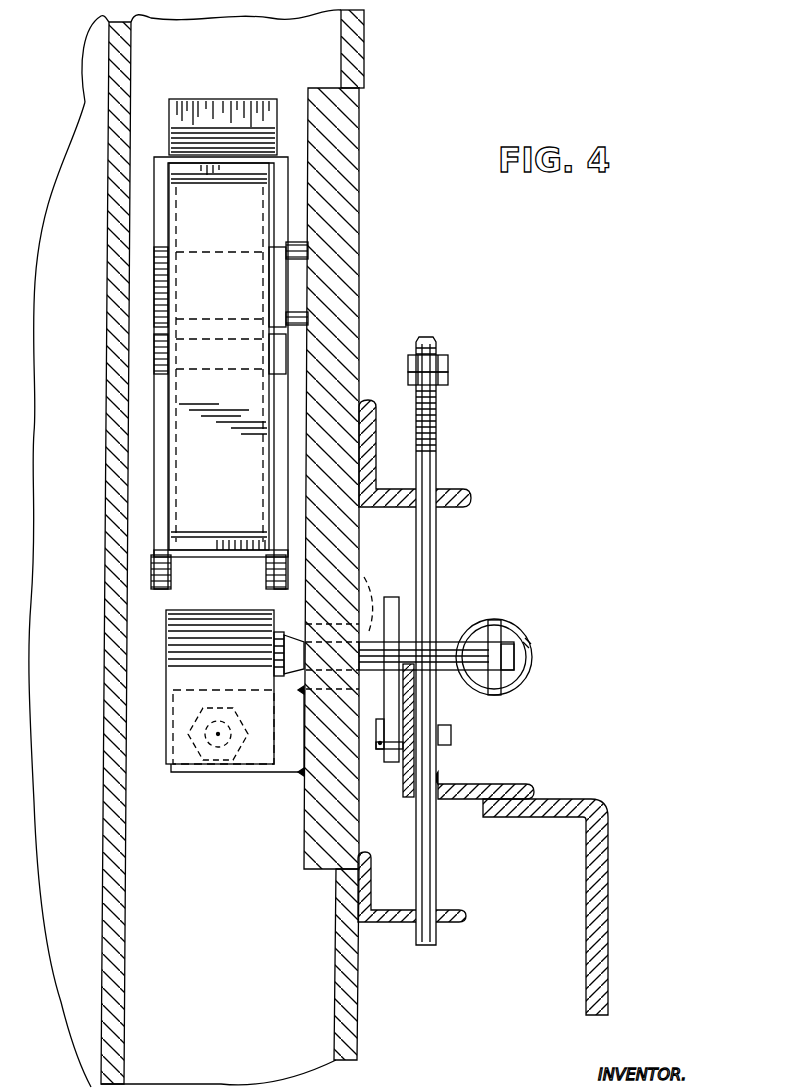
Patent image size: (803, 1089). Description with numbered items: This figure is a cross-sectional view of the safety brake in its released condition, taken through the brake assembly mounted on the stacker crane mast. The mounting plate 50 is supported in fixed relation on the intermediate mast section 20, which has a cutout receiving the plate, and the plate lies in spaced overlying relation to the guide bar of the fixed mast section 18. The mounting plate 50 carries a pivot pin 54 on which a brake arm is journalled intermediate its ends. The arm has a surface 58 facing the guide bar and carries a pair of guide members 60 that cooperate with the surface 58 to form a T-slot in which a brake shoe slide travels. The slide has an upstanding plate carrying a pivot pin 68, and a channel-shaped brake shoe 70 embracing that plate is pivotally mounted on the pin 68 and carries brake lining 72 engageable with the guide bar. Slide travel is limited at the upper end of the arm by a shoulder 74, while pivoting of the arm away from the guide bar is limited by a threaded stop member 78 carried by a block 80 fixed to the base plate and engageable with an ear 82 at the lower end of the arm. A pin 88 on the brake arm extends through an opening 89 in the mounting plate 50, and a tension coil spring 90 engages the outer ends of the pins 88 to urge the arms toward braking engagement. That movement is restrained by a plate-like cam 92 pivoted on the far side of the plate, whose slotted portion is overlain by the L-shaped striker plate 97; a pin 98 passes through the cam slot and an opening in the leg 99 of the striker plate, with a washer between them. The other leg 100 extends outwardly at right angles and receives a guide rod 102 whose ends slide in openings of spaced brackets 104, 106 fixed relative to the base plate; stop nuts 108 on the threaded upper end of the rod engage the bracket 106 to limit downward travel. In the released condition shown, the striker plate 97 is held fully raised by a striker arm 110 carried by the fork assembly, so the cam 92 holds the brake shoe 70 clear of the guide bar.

The first wall 18 is at (112, 835).
The intermediate mast section 20 is at (365, 48).
The mounting plate 50 is at (345, 207).
The pivot pin 54 is at (158, 277).
The surface 58 is at (218, 598).
The guide member 60 is at (160, 543).
The pivot pin 68 is at (158, 355).
The brake shoe 70 is at (188, 550).
The brake lining 72 is at (234, 474).
The shoulder 74 is at (222, 128).
The stop member 78 is at (209, 766).
The block 80 is at (289, 760).
The ear 82 is at (178, 764).
The pin 88 is at (444, 648).
The opening 89 is at (373, 604).
The tension coil spring 90 is at (510, 628).
The cam 92 is at (392, 594).
The striker plate 97 is at (466, 770).
The pin 98 is at (378, 748).
The leg 99 is at (405, 708).
The leg 100 is at (515, 788).
The guide rod 102 is at (431, 462).
The bracket 104 is at (380, 921).
The bracket 106 is at (462, 506).
The stop nuts 108 is at (447, 377).
The striker arm 110 is at (608, 917).